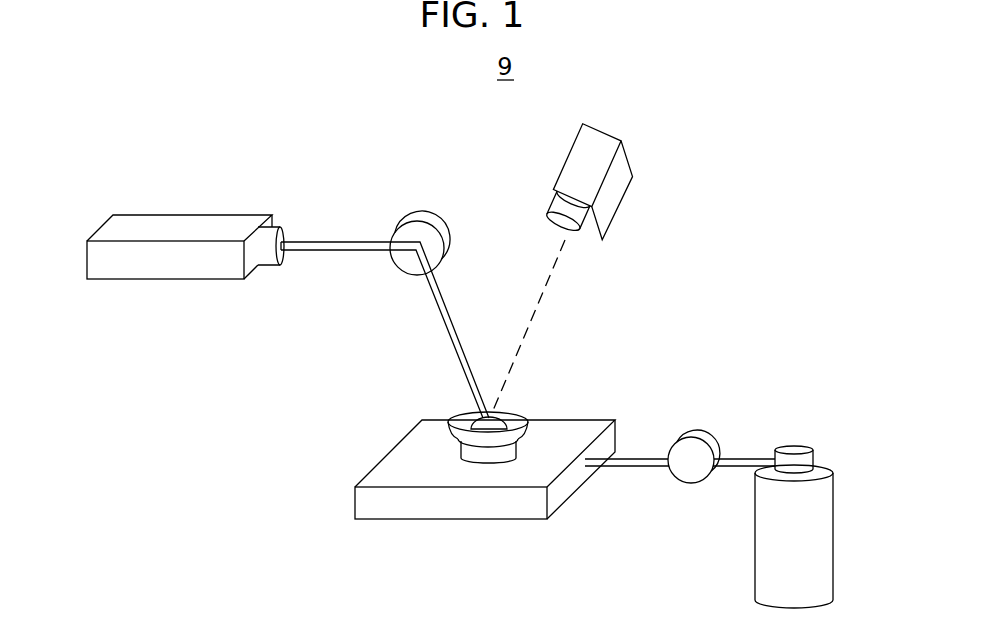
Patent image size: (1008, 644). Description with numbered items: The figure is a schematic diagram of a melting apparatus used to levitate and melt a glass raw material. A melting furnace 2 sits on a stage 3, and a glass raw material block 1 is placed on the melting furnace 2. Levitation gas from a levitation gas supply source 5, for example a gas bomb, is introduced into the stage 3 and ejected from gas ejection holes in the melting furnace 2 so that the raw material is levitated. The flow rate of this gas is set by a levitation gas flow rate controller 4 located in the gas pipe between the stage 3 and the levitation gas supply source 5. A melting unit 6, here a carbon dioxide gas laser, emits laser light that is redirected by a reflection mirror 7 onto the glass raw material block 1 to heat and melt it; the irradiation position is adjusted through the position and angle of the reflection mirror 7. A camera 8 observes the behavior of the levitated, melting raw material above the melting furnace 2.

The glass raw material block 1 is at (508, 412).
The melting furnace 2 is at (468, 437).
The stage 3 is at (423, 507).
The levitation gas flow rate controller 4 is at (698, 438).
The levitation gas supply source 5 is at (818, 493).
The melting unit 6 is at (224, 222).
The reflection mirror 7 is at (418, 222).
The camera 8 is at (615, 193).